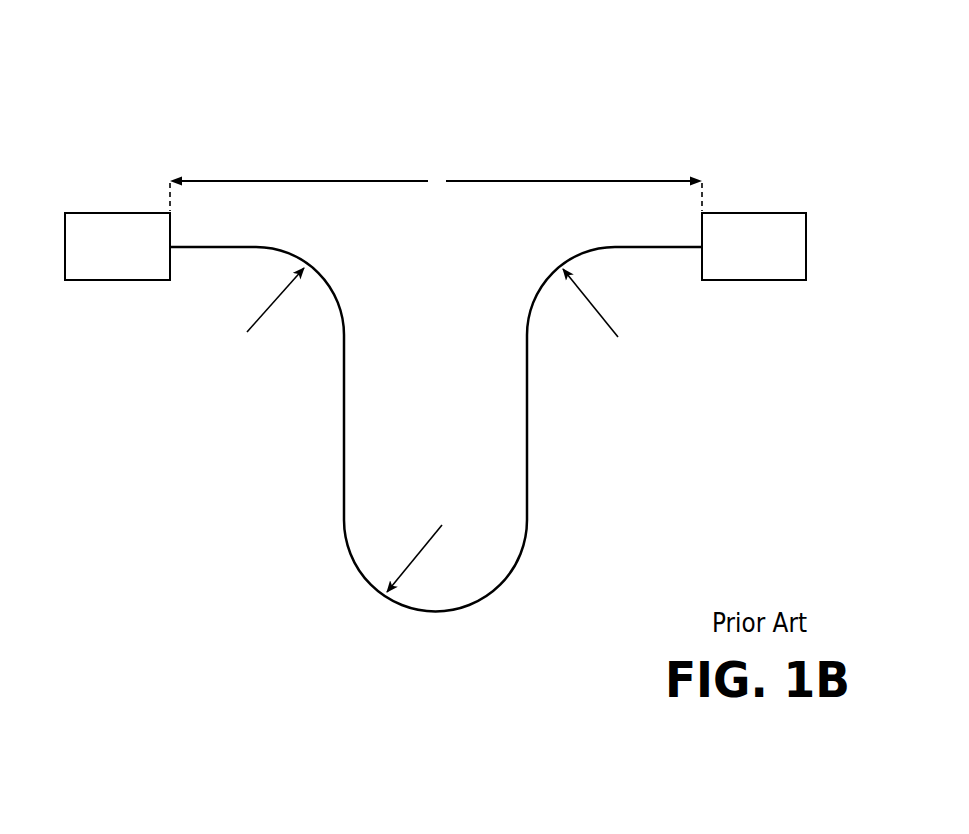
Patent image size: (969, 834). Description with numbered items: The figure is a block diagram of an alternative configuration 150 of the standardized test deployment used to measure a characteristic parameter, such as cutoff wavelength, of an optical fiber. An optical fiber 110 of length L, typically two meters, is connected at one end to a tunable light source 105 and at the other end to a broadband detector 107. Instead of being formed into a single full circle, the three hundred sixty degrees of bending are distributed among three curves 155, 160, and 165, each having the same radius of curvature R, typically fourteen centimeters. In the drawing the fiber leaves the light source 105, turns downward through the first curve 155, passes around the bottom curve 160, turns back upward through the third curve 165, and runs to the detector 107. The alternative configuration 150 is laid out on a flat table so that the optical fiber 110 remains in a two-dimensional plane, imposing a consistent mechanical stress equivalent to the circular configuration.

The alternative configuration 150 is at (762, 80).
The tunable light source 105 is at (117, 246).
The broadband detector 107 is at (754, 246).
The optical fiber 110 is at (436, 451).
The first curve 155 is at (320, 261).
The second curve 160 is at (350, 581).
The third curve 165 is at (543, 264).